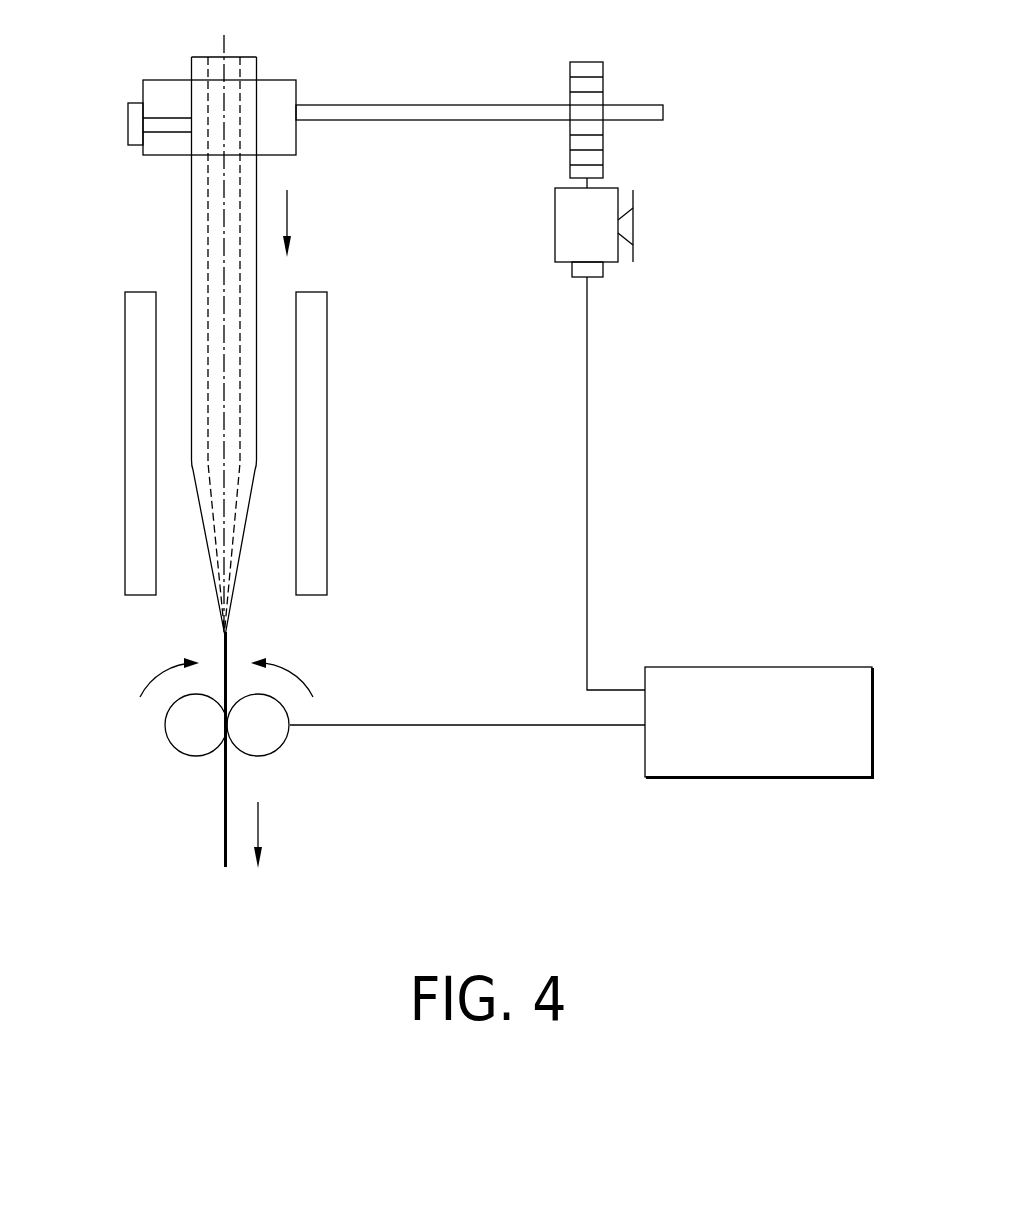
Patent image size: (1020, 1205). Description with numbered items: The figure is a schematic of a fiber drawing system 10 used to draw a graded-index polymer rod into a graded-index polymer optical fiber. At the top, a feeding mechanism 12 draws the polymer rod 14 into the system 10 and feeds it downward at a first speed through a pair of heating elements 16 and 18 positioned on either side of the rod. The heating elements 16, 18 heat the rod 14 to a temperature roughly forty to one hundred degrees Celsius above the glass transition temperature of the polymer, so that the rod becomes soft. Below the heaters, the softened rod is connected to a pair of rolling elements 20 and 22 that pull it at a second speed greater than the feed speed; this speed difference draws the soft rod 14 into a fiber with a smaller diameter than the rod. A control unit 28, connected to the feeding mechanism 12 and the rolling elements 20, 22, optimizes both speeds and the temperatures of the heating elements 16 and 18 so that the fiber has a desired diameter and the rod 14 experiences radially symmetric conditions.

The fiber drawing system 10 is at (750, 316).
The feeding mechanism 12 is at (163, 93).
The polymer rod 14 is at (203, 222).
The heating element 16 is at (320, 322).
The heating element 18 is at (132, 320).
The rolling element 20 is at (177, 727).
The rolling element 22 is at (275, 735).
The control unit 28 is at (805, 667).